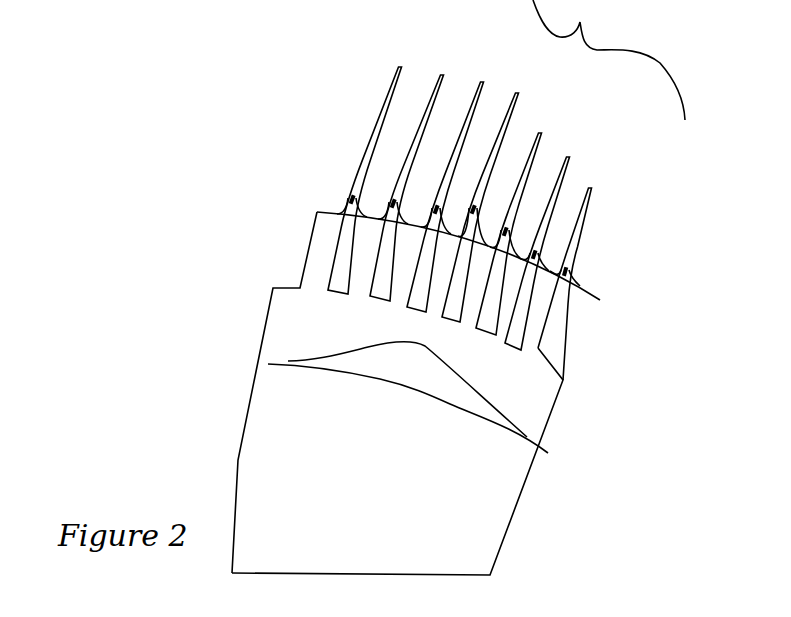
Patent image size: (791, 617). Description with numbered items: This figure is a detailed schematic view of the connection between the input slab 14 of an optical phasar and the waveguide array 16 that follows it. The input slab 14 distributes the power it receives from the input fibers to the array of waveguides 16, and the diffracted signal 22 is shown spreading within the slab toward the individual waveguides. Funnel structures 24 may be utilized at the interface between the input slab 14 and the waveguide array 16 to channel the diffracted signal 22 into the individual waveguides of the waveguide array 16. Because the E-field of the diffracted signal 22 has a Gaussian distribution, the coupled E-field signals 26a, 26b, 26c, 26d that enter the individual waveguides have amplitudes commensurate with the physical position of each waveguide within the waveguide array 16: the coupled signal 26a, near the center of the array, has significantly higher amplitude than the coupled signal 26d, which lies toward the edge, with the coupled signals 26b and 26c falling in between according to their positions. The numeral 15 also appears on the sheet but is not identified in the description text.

The input slab 14 is at (278, 480).
The element 15 is at (162, 7).
The waveguide array 16 is at (609, 60).
The diffracted signal 22 is at (483, 398).
The funnel structures 24 is at (367, 268).
The coupled E-field signal 26a is at (483, 190).
The coupled E-field signal 26b is at (434, 203).
The coupled E-field signal 26c is at (387, 197).
The coupled E-field signal 26d is at (351, 198).